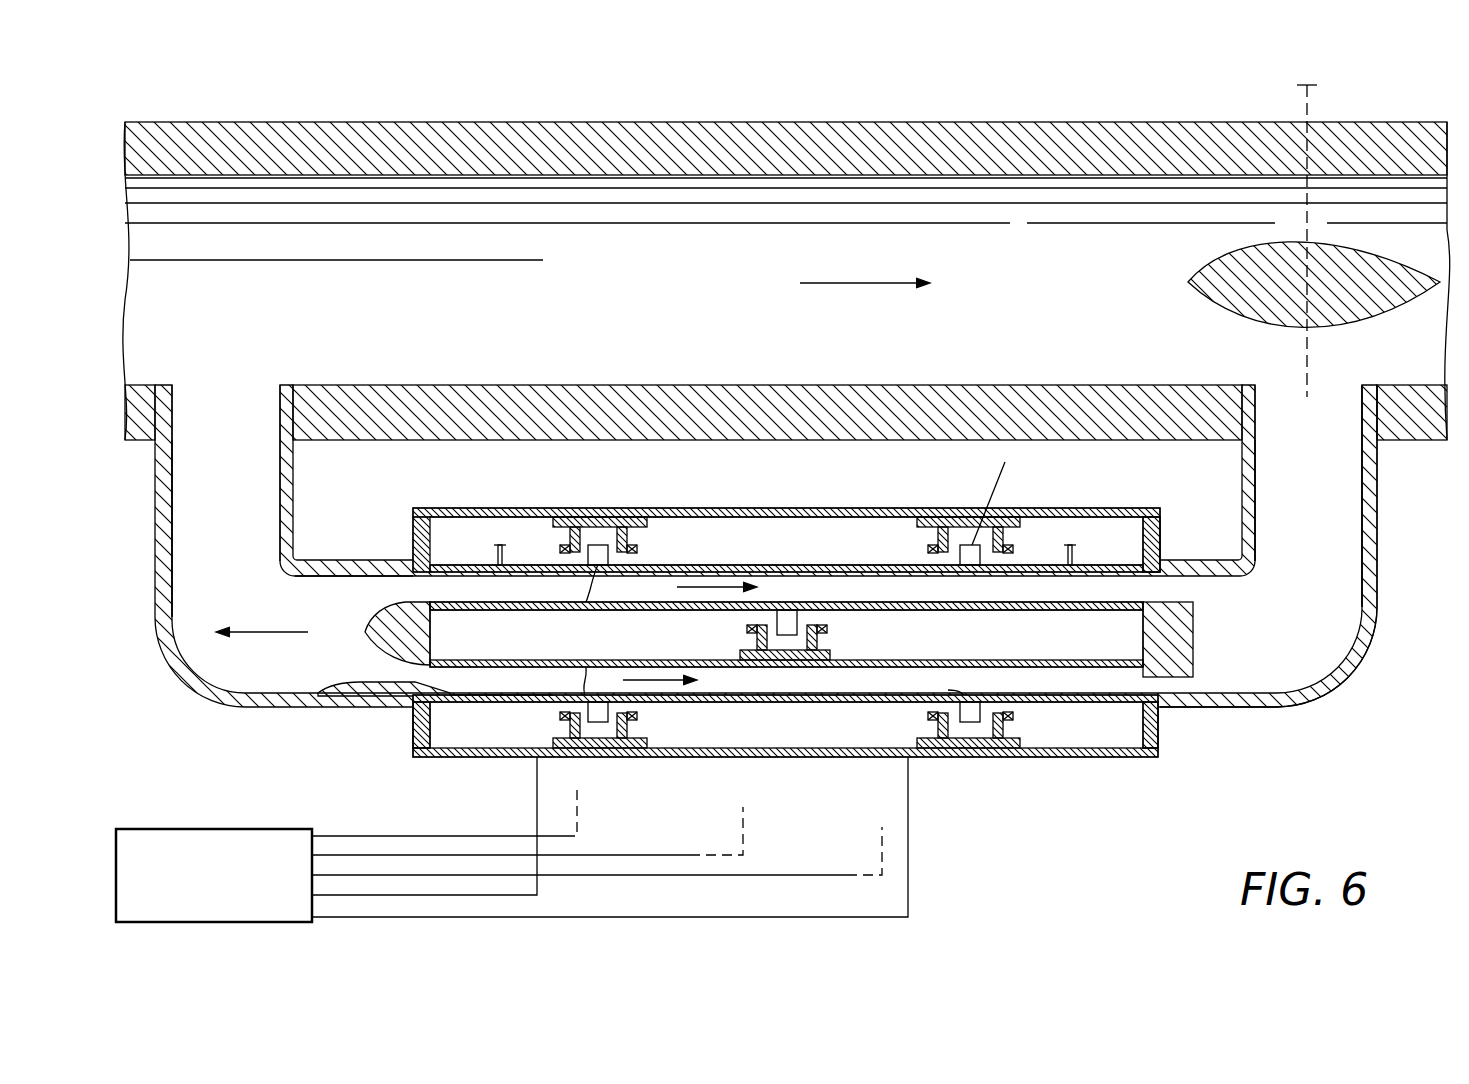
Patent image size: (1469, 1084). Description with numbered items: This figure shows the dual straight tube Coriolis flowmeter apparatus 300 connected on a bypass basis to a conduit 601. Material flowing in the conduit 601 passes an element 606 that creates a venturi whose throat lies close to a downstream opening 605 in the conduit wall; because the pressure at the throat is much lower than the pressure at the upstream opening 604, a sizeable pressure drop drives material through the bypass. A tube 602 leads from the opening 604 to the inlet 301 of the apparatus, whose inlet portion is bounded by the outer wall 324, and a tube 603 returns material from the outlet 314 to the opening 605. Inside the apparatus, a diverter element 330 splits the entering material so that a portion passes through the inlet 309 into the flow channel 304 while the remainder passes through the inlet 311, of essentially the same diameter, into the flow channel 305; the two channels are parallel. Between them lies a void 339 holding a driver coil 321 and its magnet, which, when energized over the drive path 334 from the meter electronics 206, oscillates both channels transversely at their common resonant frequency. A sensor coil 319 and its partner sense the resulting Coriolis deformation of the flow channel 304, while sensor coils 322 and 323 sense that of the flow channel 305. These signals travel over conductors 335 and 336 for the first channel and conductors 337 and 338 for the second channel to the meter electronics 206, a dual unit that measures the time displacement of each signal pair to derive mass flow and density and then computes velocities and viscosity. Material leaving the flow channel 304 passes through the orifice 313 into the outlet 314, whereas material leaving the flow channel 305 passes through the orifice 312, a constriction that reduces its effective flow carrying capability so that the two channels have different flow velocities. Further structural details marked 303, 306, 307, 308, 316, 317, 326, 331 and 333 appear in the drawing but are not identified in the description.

The conduit 601 is at (316, 122).
The opening 604 is at (218, 435).
The opening 605 is at (1278, 420).
The venturi element 606 is at (1322, 298).
The tube 602 is at (160, 660).
The tube 603 is at (1378, 608).
The inlet 301 is at (305, 612).
The diverter element 330 is at (365, 632).
The inlet of flow tube 311 is at (348, 663).
The lower tube end cap 331 is at (413, 757).
The flow channel 305 is at (548, 690).
The outer wall 324 is at (333, 557).
The inlet of flow tube 309 is at (398, 596).
The baffle 308 is at (503, 630).
The upper flow tube 303 is at (658, 508).
The upper tube top wall 306 is at (775, 537).
The upper tube bottom wall 316 is at (668, 565).
The sensor coil 319 is at (905, 537).
The flow channel 304 is at (910, 585).
The apparatus 300 is at (741, 642).
The middle tube plug 326 is at (1240, 492).
The orifice 313 is at (1150, 592).
The void 339 is at (665, 648).
The driver coil 321 is at (833, 657).
The lower tube top wall 317 is at (757, 703).
The sensor coil 322 is at (640, 757).
The lower flow tube 307 is at (828, 725).
The sensor coil 323 is at (1010, 757).
The orifice 312 is at (1130, 685).
The housing bottom wall 333 is at (1192, 712).
The outlet 314 is at (1265, 670).
The meter electronics 206 is at (203, 829).
The conductor 335 is at (410, 836).
The conductor 336 is at (498, 855).
The drive signal path 334 is at (697, 875).
The conductor 337 is at (540, 887).
The conductor 338 is at (908, 888).